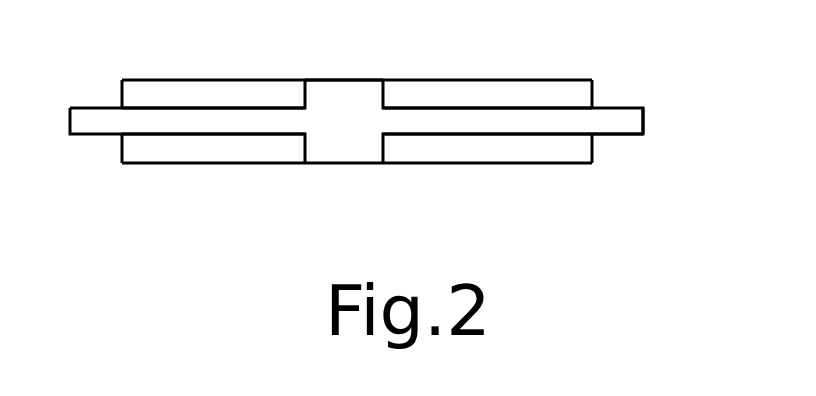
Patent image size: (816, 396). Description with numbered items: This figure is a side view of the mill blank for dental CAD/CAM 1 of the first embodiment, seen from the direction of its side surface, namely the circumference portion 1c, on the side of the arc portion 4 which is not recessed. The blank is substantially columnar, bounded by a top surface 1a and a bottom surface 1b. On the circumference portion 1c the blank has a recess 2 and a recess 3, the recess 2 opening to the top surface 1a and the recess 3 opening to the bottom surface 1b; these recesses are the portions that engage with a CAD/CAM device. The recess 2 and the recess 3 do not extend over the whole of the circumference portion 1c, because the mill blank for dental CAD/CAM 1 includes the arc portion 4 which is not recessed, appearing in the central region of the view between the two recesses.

The mill blank for dental CAD/CAM 1 is at (378, 192).
The top surface 1a is at (519, 79).
The bottom surface 1b is at (508, 163).
The circumference portion 1c is at (648, 121).
The recess 2 is at (613, 108).
The recess 3 is at (598, 137).
The arc portion 4 is at (342, 88).